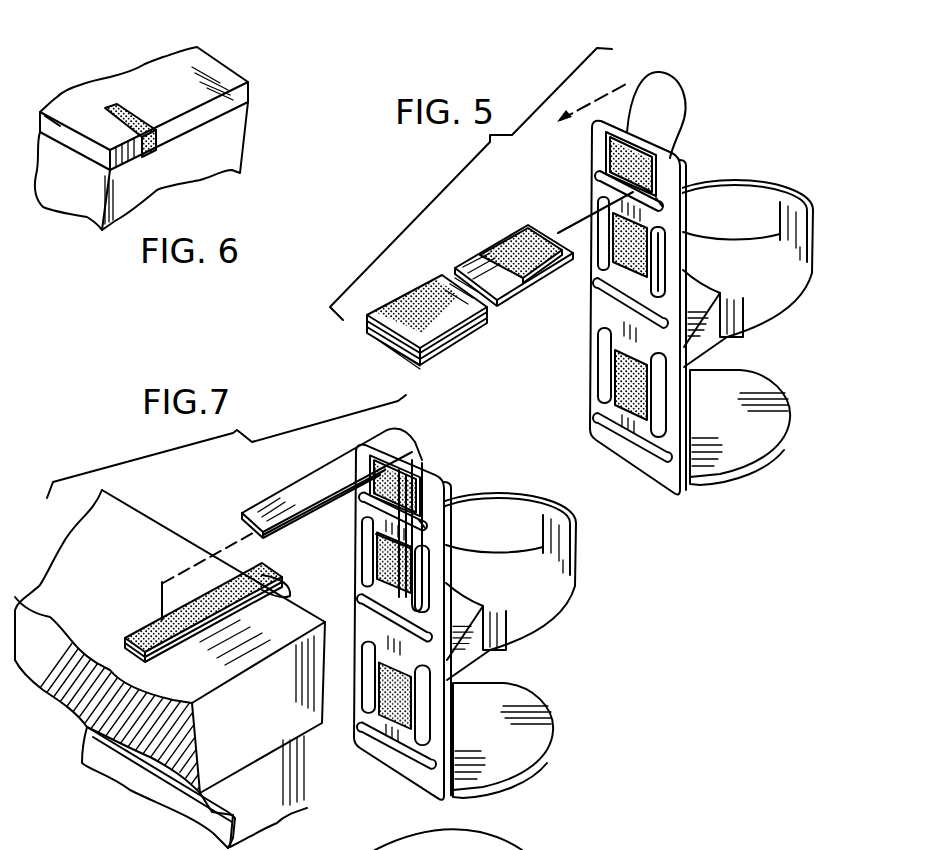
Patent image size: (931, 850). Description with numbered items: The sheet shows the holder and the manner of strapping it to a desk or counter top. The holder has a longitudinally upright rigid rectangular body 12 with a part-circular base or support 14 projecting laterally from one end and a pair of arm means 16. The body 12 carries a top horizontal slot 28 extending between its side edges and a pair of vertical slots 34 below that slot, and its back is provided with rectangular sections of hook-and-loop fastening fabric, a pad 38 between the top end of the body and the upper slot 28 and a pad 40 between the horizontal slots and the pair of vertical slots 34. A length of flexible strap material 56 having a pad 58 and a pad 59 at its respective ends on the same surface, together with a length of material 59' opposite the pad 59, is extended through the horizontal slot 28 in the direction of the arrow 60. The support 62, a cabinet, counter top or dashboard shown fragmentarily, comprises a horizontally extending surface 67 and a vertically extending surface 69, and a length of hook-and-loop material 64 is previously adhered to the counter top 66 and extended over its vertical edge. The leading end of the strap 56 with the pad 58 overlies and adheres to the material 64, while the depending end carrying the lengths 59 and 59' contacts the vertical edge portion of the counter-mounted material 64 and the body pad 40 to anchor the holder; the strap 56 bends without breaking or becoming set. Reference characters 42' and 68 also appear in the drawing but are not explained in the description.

In FIG. 5, the rigid rectangular body 12 is at (590, 397).
In FIG. 7, the rigid rectangular body 12 is at (353, 737).
In FIG. 5, the part-circular base 14 is at (759, 375).
In FIG. 7, the part-circular base 14 is at (526, 691).
In FIG. 5, the arm means 16 is at (741, 187).
In FIG. 7, the arm means 16 is at (503, 495).
In FIG. 5, the top horizontal slot 28 is at (660, 205).
In FIG. 7, the top horizontal slot 28 is at (430, 523).
In FIG. 5, the pair of vertical slots 34 is at (660, 262).
In FIG. 7, the pair of vertical slots 34 is at (425, 590).
In FIG. 5, the fastening fabric pad 38 is at (612, 157).
In FIG. 7, the fastening fabric pad 38 is at (408, 484).
In FIG. 5, the fastening fabric pad 40 is at (612, 272).
In FIG. 7, the fastening fabric pad 40 is at (428, 620).
In FIG. 7, the lower component 42' is at (462, 834).
In FIG. 5, the strap material 56 is at (487, 312).
In FIG. 7, the strap material 56 is at (285, 482).
In FIG. 5, the Velcro pad 58 is at (511, 237).
In FIG. 7, the Velcro pad 58 is at (290, 530).
In FIG. 5, the Velcro pad 59 is at (426, 325).
In FIG. 7, the Velcro pad 59 is at (362, 562).
In FIG. 7, the Velcro material 59' is at (444, 535).
In FIG. 5, the arrow 60 is at (683, 100).
In FIG. 6, the support 62 is at (240, 73).
In FIG. 7, the support 62 is at (150, 490).
In FIG. 6, the Velcro material 64 is at (133, 104).
In FIG. 7, the Velcro material 64 is at (148, 618).
In FIG. 6, the counter top 66 is at (72, 113).
In FIG. 6, the horizontally extending surface 67 is at (198, 57).
In FIG. 7, the lower member 68 is at (398, 847).
In FIG. 6, the vertically extending surface 69 is at (230, 152).